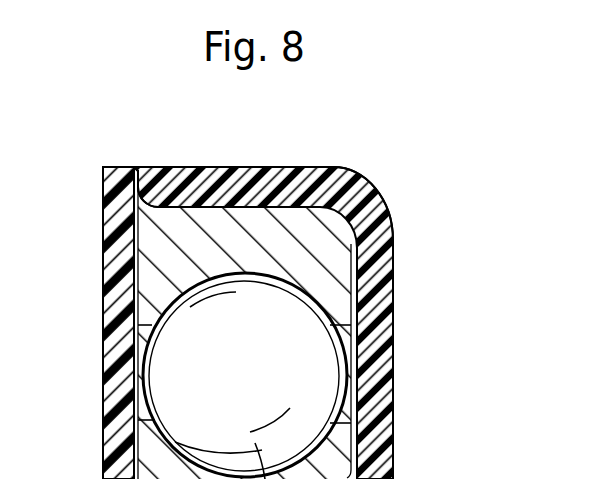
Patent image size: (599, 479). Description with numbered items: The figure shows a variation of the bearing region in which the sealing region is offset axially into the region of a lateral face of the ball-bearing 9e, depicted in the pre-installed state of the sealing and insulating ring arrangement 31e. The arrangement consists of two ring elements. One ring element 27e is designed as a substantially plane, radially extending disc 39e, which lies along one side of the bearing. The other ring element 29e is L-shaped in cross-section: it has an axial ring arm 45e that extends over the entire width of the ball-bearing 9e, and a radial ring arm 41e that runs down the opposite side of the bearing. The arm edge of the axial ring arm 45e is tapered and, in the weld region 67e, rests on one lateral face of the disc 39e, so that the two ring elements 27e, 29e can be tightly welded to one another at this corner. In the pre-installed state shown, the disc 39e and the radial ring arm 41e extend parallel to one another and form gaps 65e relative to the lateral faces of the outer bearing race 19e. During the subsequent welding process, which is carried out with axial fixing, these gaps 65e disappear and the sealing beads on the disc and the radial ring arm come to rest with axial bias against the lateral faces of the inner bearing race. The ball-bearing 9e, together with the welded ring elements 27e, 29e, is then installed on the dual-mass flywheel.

The ring element 27e is at (103, 200).
The ring element 29e is at (395, 228).
The axial ring arm 45e is at (264, 185).
The weld region 67e is at (140, 169).
The sealing and insulating ring arrangement 31e is at (355, 162).
The outer bearing race 19e is at (160, 255).
The gaps 65e is at (138, 322).
The ball-bearing 9e is at (317, 364).
The disc 39e is at (112, 377).
The radial ring arm 41e is at (375, 424).